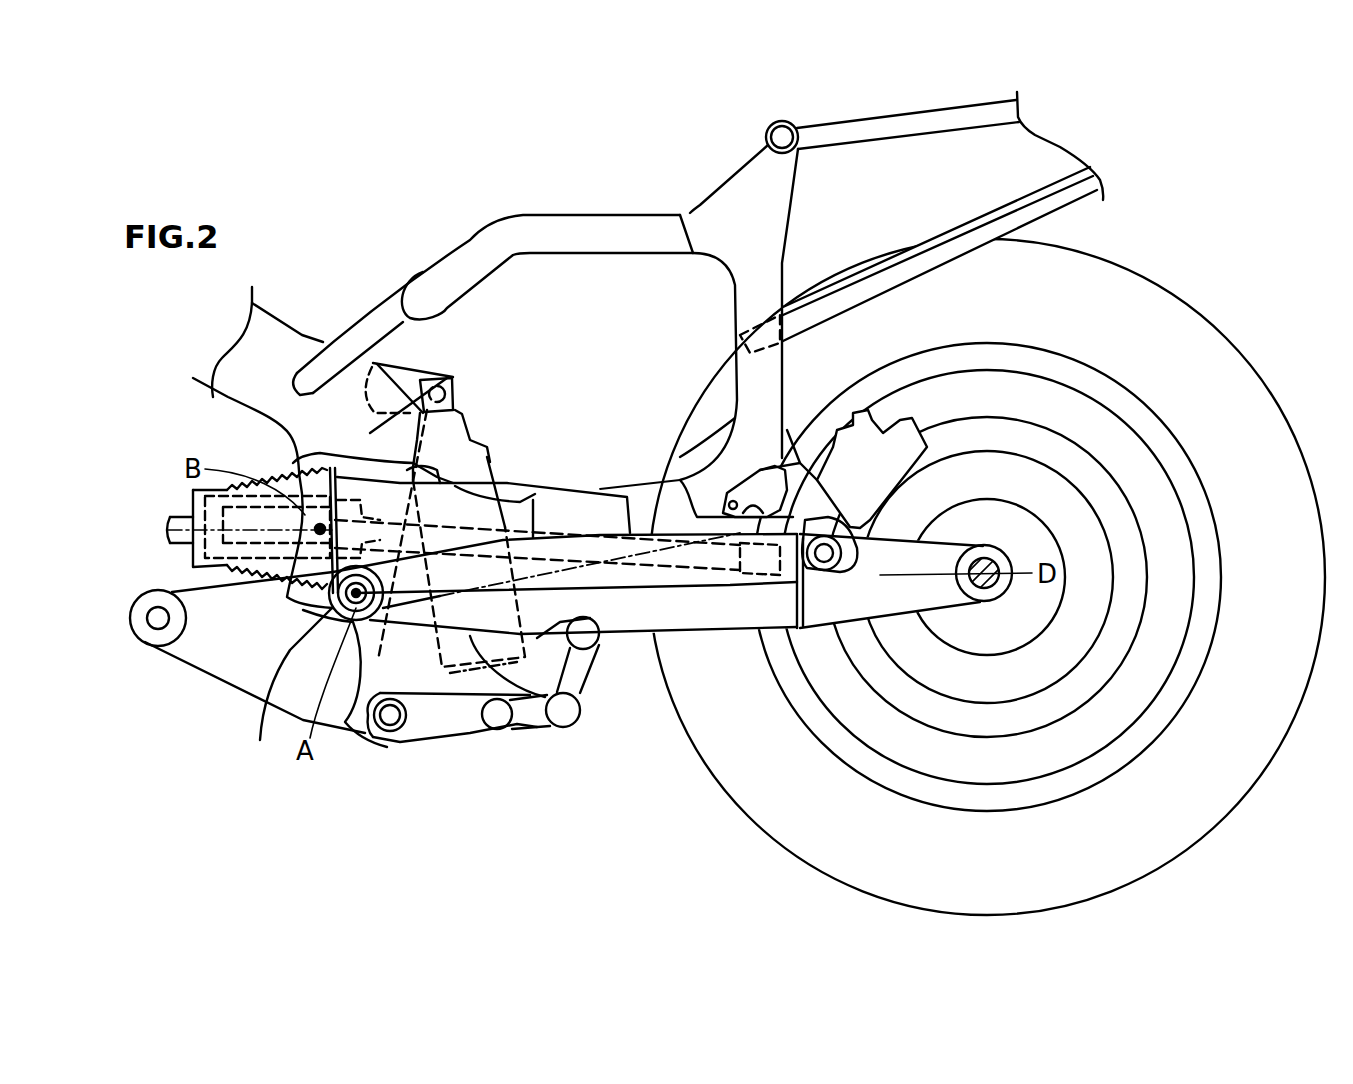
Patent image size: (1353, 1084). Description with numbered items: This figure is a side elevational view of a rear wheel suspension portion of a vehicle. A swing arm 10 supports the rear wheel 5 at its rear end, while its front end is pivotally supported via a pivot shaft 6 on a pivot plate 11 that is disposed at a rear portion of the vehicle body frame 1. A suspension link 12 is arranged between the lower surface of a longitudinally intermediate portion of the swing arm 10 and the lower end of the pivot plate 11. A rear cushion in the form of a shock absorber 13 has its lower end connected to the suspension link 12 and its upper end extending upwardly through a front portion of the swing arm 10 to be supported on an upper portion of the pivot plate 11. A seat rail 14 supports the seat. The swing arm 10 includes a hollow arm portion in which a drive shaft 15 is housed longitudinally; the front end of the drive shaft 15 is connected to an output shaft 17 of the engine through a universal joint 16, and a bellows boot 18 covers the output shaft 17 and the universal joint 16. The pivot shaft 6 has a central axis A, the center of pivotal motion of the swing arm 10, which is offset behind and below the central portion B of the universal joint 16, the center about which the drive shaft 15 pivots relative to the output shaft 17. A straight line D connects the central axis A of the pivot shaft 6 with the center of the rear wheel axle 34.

The vehicle body frame 1 is at (292, 300).
The rear wheel 5 is at (1193, 323).
The pivot shaft 6 is at (340, 605).
The swing arm 10 is at (738, 600).
The pivot plate 11 is at (408, 365).
The suspension link 12 is at (440, 718).
The rear cushion (shock absorber) 13 is at (480, 445).
The seat rail 14 is at (950, 133).
The drive shaft 15 is at (680, 570).
The universal joint 16 is at (290, 592).
The output shaft 17 is at (167, 522).
The bellows boot 18 is at (277, 470).
The rear wheel axle 34 is at (984, 590).